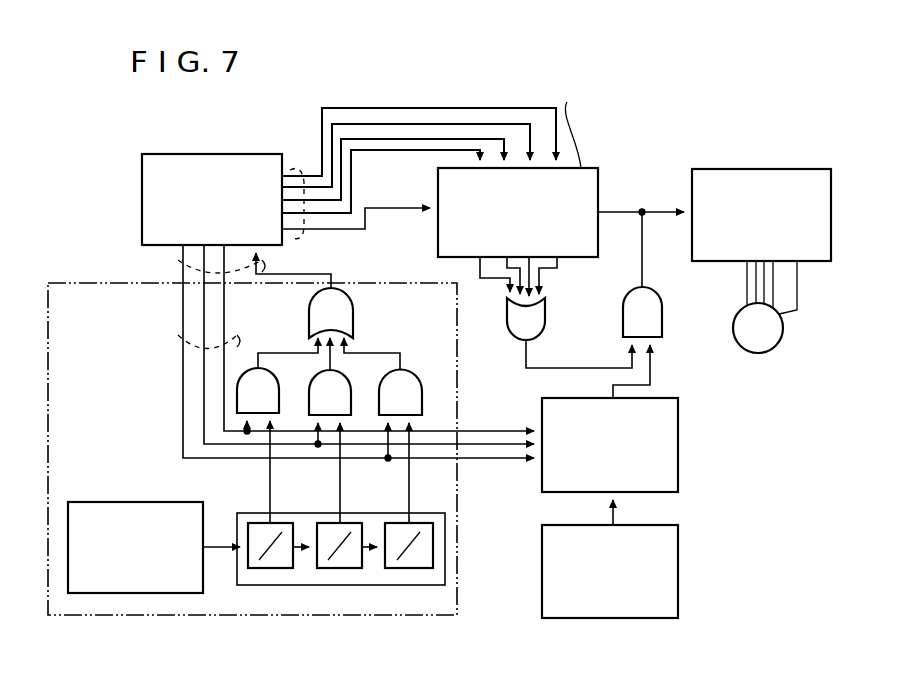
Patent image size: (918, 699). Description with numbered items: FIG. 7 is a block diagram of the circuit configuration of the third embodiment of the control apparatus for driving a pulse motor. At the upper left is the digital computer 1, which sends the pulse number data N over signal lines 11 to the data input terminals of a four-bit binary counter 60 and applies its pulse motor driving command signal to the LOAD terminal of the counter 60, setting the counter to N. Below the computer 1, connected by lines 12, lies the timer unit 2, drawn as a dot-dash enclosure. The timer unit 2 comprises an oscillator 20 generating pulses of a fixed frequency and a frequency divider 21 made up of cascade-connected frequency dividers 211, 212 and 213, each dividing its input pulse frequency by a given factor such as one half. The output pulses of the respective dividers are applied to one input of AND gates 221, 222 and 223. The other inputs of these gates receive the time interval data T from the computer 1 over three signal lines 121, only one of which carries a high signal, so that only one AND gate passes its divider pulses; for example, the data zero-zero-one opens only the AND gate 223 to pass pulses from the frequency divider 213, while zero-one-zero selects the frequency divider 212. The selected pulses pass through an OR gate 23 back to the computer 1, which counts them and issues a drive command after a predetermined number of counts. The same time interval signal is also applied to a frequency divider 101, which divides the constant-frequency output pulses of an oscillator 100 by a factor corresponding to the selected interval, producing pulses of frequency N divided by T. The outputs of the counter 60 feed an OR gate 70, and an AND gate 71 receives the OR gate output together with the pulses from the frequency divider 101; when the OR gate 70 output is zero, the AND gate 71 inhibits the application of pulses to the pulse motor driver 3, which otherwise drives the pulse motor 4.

The digital computer 1 is at (216, 154).
The data output lines 11 is at (296, 166).
The control signal lines 12 is at (178, 266).
The signal lines 121 is at (178, 340).
The timer unit 2 is at (458, 585).
The oscillator 20 is at (150, 502).
The frequency divider 21 is at (237, 518).
The frequency divider 211 is at (264, 568).
The frequency divider 212 is at (336, 568).
The frequency divider 213 is at (406, 568).
The AND gate 221 is at (279, 397).
The AND gate 222 is at (351, 386).
The AND gate 223 is at (416, 371).
The OR gate 23 is at (309, 322).
The pulse motor driver 3 is at (745, 169).
The pulse motor 4 is at (782, 337).
The 4-bit binary counter 60 is at (599, 187).
The OR gate 70 is at (507, 328).
The AND gate 71 is at (623, 305).
The oscillator 100 is at (678, 542).
The frequency divider 101 is at (678, 448).